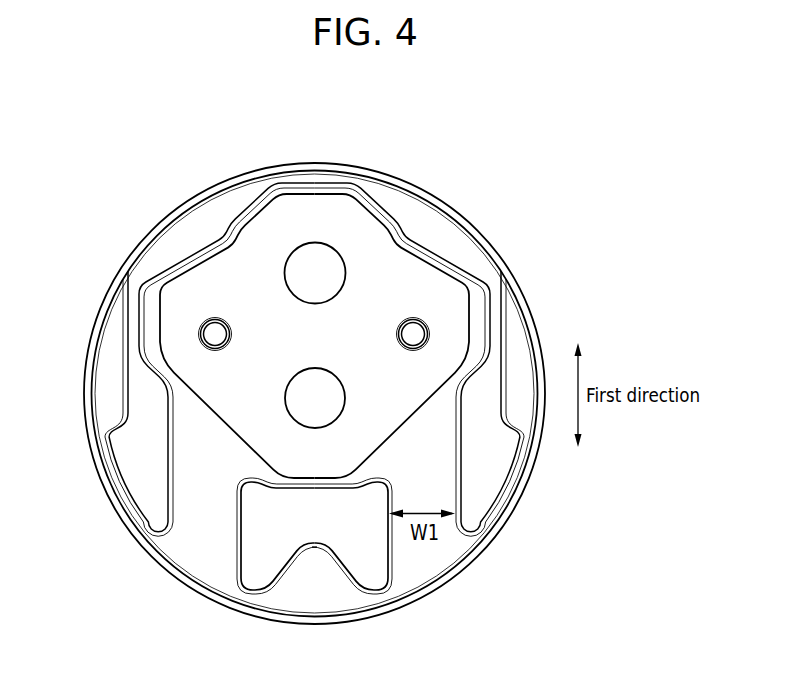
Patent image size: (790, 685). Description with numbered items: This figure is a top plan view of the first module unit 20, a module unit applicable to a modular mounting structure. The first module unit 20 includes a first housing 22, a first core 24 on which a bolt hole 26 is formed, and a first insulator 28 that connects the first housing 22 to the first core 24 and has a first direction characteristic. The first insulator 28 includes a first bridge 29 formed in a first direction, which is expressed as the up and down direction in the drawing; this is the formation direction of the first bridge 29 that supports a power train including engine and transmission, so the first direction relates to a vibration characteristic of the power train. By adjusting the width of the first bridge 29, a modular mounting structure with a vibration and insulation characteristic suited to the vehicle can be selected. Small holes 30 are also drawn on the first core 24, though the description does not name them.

The first module unit 20 is at (476, 597).
The first housing 22 is at (397, 608).
The first core 24 is at (258, 423).
The bolt hole 26 is at (324, 403).
The first insulator 28 is at (500, 466).
The first bridge 29 is at (202, 488).
The fastening hole 30 is at (215, 334).